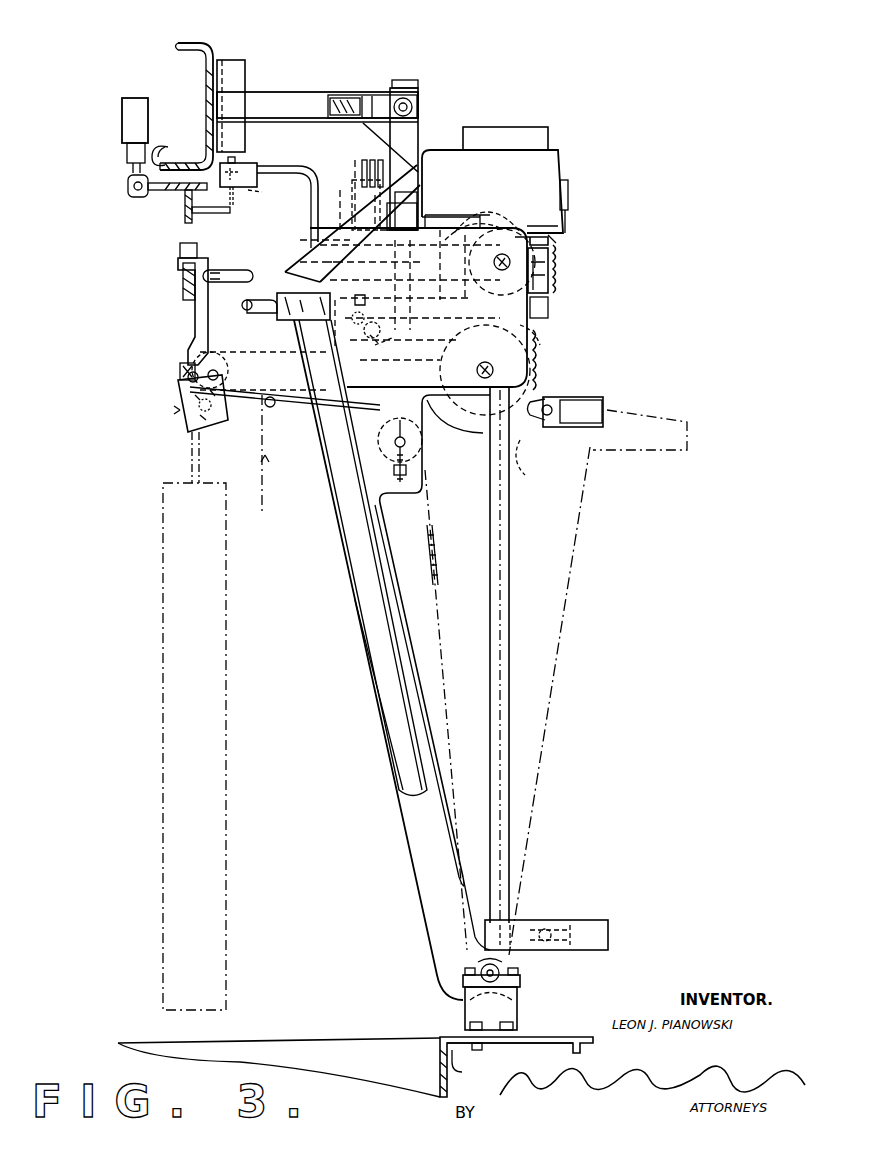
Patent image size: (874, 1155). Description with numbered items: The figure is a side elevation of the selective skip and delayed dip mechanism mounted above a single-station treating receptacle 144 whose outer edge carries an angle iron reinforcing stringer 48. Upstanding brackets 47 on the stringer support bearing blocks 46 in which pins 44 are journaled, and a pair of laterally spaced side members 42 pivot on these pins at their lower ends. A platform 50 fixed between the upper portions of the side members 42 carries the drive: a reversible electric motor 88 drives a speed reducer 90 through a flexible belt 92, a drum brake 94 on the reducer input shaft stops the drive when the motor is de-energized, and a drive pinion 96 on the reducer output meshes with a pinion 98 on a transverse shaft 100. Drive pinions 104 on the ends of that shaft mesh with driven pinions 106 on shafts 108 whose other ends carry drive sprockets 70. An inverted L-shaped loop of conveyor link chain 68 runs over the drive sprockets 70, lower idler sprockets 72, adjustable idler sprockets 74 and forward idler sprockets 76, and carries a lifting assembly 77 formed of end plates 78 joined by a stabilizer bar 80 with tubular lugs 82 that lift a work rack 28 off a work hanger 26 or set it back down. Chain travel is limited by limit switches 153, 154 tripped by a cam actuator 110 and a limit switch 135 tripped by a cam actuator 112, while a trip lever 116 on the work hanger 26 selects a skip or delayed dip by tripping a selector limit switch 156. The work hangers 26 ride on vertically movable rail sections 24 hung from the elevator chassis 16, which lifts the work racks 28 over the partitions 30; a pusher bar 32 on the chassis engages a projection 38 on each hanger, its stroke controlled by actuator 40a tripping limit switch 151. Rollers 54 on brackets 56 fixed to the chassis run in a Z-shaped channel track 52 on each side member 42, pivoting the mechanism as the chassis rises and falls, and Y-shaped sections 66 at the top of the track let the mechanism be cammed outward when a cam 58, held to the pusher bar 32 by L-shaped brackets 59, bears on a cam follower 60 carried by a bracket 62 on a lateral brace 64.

The elevator chassis 16 is at (200, 43).
The limit switch 151 is at (120, 120).
The actuator 40a is at (128, 185).
The pusher bar 32 is at (175, 190).
The L-shaped brackets 59 is at (210, 215).
The cam 58 is at (240, 165).
The cam follower 60 is at (262, 192).
The bracket 62 is at (312, 210).
The projection 38 is at (180, 250).
The vertically movable rail sections 24 is at (183, 290).
The work hangers 26 is at (200, 313).
The tubular lugs 82 is at (178, 376).
The end plates 78 is at (180, 420).
The lifting assembly 77 is at (180, 410).
The stabilizer bar 80 is at (213, 457).
The work racks 28 is at (212, 920).
The trip lever 116 is at (245, 268).
The cam actuator 110 is at (328, 438).
The limit switch 156 is at (297, 365).
The forward idler sprockets 76 is at (267, 345).
The side members 42 is at (430, 846).
The channel track 52 is at (397, 714).
The adjustable idler sprockets 74 is at (422, 442).
The conveyor link chain 68 is at (433, 533).
The lower idler sprockets 72 is at (470, 955).
The platform 50 is at (535, 312).
The pinion 98 is at (565, 262).
The shafts 108 is at (478, 371).
The drive pinions 104 is at (548, 277).
The transverse shaft 100 is at (548, 236).
The drive sprockets 70 is at (553, 356).
The driven pinions 106 is at (540, 338).
The limit switch 153 is at (372, 332).
The reversible electric motor 88 is at (547, 158).
The flexible belt 92 is at (407, 198).
The speed reducer 90 is at (437, 215).
The drive pinion 96 is at (496, 216).
The rollers 54 is at (437, 92).
The brackets 56 is at (300, 97).
The Y-shaped sections 66 is at (377, 128).
The drum brake 94 is at (362, 170).
The lateral brace 64 is at (354, 186).
The limit switch 135 is at (590, 410).
The cam actuator 112 is at (549, 697).
The limit switch 154 is at (590, 917).
The pins 44 is at (512, 973).
The bearing blocks 46 is at (460, 984).
The upstanding brackets 47 is at (500, 1012).
The angle iron reinforcing stringer 48 is at (455, 1060).
The partitions 30 is at (400, 1072).
The treating receptacle 144 is at (300, 1040).